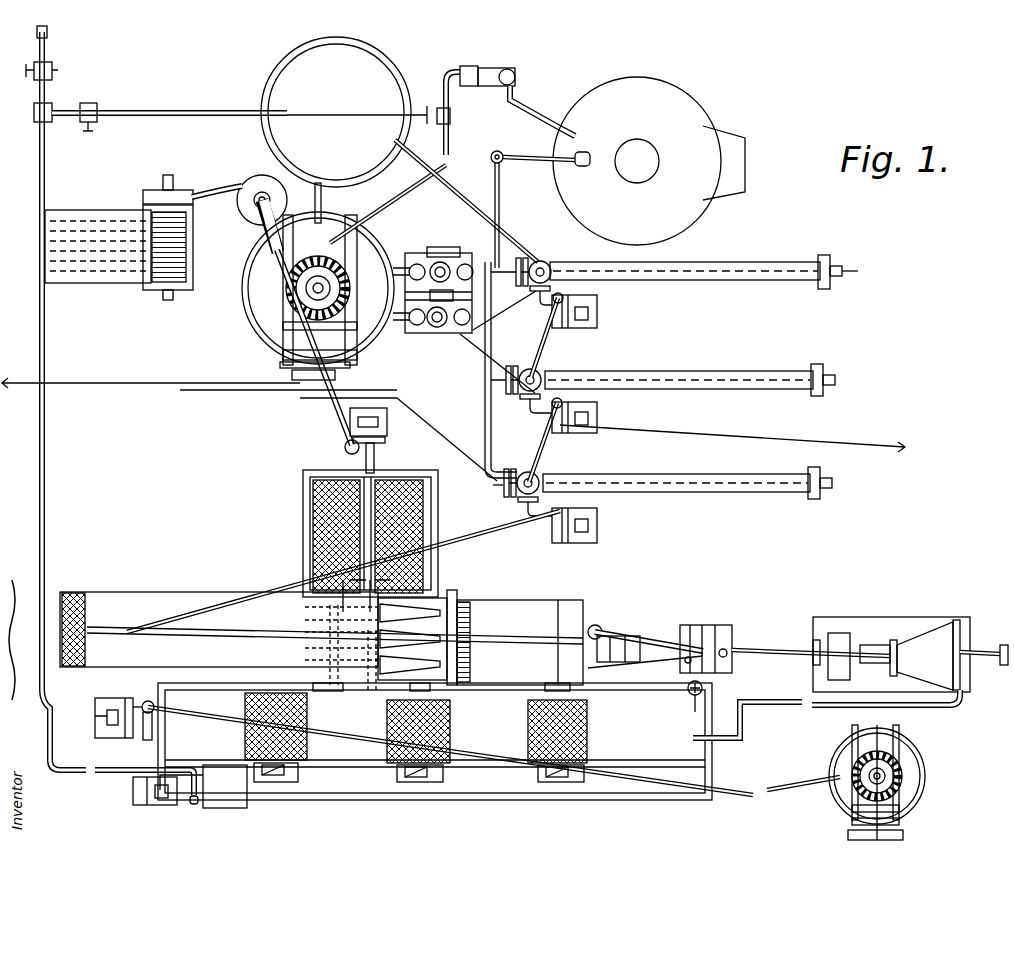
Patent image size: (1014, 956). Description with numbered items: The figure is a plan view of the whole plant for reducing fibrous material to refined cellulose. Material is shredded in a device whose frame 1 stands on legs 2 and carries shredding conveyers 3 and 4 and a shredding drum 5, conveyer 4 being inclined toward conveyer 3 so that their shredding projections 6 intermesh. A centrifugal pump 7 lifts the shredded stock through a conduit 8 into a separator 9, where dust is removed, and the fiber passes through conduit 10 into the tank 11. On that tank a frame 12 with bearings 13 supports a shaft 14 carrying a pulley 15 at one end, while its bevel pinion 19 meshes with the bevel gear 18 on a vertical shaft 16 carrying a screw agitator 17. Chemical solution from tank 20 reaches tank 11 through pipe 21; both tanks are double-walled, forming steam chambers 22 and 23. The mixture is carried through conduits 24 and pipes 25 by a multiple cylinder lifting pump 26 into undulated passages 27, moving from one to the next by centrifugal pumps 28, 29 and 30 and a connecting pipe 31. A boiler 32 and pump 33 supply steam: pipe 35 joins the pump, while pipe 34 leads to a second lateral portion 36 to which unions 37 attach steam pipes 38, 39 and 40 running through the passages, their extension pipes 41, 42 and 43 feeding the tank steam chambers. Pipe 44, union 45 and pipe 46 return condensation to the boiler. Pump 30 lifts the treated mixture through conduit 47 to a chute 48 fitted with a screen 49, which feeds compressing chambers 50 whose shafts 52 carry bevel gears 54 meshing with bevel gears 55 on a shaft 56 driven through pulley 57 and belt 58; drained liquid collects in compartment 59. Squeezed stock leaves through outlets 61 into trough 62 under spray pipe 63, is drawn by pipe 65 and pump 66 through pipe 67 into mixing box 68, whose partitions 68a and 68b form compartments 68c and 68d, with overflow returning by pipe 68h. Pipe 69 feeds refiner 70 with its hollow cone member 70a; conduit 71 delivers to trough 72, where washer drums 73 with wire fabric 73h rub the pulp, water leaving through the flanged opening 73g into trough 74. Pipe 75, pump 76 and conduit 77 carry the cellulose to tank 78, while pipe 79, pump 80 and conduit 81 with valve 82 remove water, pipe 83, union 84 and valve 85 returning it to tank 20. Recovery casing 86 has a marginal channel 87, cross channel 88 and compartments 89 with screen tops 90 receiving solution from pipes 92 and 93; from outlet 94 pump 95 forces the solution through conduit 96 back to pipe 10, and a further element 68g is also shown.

The frame of the shredding device 1 is at (60, 282).
The legs 2 is at (463, 418).
The shredding conveyer 3 is at (62, 285).
The shredding conveyer 4 is at (90, 225).
The shredding drum 5 is at (172, 270).
The shredding projections 6 is at (92, 262).
The centrifugal pump 7 is at (160, 200).
The pipe or conduit 8 is at (218, 195).
The separator 9 is at (221, 98).
The pipe or conduit 10 is at (272, 240).
The tank or vat 11 is at (243, 282).
The frame 12 is at (357, 340).
The bearings 13 is at (352, 312).
The shaft 14 is at (340, 362).
The base plate 15 is at (292, 376).
The vertical shaft 16 is at (138, 285).
The spiral or screw agitator 17 is at (925, 782).
The bevel gear 18 is at (318, 258).
The bevel pinion 19 is at (330, 290).
The tank or vat 20 is at (370, 72).
The pipe 21 is at (315, 192).
The steam chamber 22 is at (256, 332).
The steam chamber 23 is at (240, 100).
The pipes or conduits 24 is at (405, 260).
The pipes 25 is at (500, 235).
The multiple cylinder lifting pump 26 is at (470, 340).
The undulated passages 27 is at (676, 282).
The centrifugal pump 28 is at (585, 327).
The centrifugal pump 29 is at (630, 447).
The centrifugal pump 30 is at (597, 528).
The connecting pipe 31 is at (545, 344).
The boiler 32 is at (649, 161).
The pump 33 is at (480, 86).
The pipe 34 is at (538, 155).
The pipe 35 is at (540, 110).
The second lateral portion 36 is at (492, 430).
The unions 37 is at (525, 262).
The steam pipe 38 is at (552, 265).
The steam pipe 39 is at (548, 415).
The steam pipe 40 is at (505, 490).
The extension pipe 41 is at (468, 200).
The extension pipe 42 is at (510, 370).
The extension pipe 43 is at (470, 440).
The pipe 44 is at (448, 100).
The union 45 is at (450, 118).
The pipe 46 is at (426, 120).
The pipe or conduit 47 is at (480, 512).
The chute 48 is at (143, 600).
The screen 49 is at (78, 592).
The compressing chambers 50 is at (440, 590).
The shafts 52 is at (373, 675).
The bevel gears 54 is at (331, 634).
The bevel gears 55 is at (285, 675).
The shaft 56 is at (325, 695).
The pulley 57 is at (345, 698).
The belt 58 is at (350, 733).
The compartment 59 is at (450, 703).
The outlets 61 is at (462, 605).
The trough 62 is at (540, 605).
The spray pipe 63 is at (468, 598).
The pipe 65 is at (612, 662).
The centrifugal pump 66 is at (648, 662).
The pipe 67 is at (660, 635).
The mixing box 68 is at (715, 630).
The partition 68a is at (727, 640).
The partition 68b is at (700, 628).
The compartment 68c is at (714, 628).
The compartment 68d is at (725, 634).
The valve part 68g is at (687, 628).
The pipe 68h is at (675, 670).
The pipe 69 is at (783, 652).
The refining device 70 is at (940, 640).
The hollow cone member 70a is at (928, 640).
The pipe or conduit 71 is at (768, 696).
The trough 72 is at (435, 741).
The washer drums 73 is at (307, 750).
The screening or wire fabric 73h is at (250, 738).
The trough 74 is at (250, 795).
The pipe 75 is at (146, 740).
The centrifugal pump 76 is at (118, 738).
The pipe or conduit 77 is at (205, 712).
The tank or receptacle 78 is at (915, 770).
The pipe 79 is at (193, 805).
The centrifugal pump 80 is at (168, 805).
The pipe or conduit 81 is at (47, 160).
The valve 82 is at (58, 70).
The pipe 83 is at (156, 110).
The union 84 is at (34, 113).
The valve 85 is at (95, 125).
The receptacle or trough or casing 86 is at (303, 556).
The marginal channel 87 is at (432, 500).
The cross channel 88 is at (395, 482).
The compartments 89 is at (313, 492).
The screen tops 90 is at (313, 537).
The pipe 92 is at (303, 575).
The pipe 93 is at (366, 458).
The outlet 94 is at (377, 470).
The centrifugal pump 95 is at (378, 428).
The pipe or conduit 96 is at (330, 402).